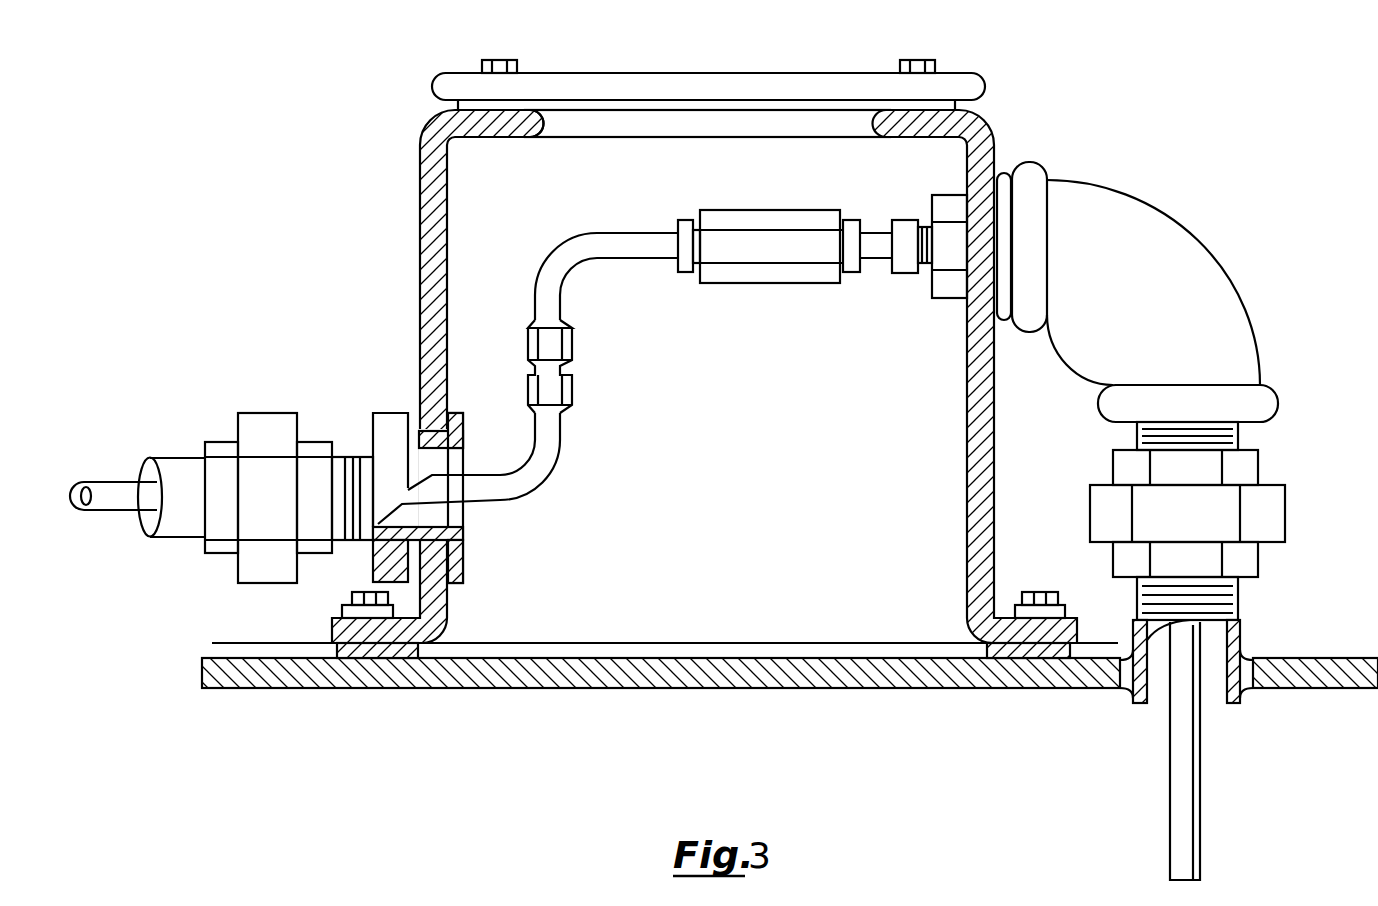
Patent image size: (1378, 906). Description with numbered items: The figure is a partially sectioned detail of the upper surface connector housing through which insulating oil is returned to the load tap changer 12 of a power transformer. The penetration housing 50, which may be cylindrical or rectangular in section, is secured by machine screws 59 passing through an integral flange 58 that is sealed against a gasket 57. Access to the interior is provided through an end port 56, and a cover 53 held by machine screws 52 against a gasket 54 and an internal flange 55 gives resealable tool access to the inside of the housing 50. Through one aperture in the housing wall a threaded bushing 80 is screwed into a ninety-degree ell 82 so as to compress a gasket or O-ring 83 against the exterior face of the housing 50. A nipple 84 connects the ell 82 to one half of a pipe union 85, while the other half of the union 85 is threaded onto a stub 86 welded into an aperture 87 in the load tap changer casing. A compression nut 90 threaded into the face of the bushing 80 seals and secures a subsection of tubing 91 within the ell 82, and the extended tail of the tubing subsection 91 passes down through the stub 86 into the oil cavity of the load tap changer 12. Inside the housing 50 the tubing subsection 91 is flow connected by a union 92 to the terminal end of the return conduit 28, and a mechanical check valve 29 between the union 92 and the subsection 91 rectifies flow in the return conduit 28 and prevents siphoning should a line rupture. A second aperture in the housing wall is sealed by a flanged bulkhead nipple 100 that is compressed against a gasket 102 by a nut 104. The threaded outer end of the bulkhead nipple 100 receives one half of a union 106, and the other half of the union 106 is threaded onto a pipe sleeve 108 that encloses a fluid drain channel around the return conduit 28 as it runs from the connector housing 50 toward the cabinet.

The load tap changer 12 is at (640, 688).
The return conduit 28 is at (91, 503).
The mechanical check valve 29 is at (750, 257).
The penetration housing 50 is at (420, 215).
The machine screws 52 is at (482, 64).
The cover 53 is at (730, 97).
The gasket 54 is at (655, 112).
The internal flange 55 is at (510, 137).
The end port 56 is at (545, 125).
The gasket 57 is at (492, 643).
The integral flange 58 is at (332, 624).
The machine screws 59 is at (350, 590).
The threaded bushing 80 is at (940, 300).
The 90° ell 82 is at (1135, 294).
The gasket or O-ring 83 is at (1003, 178).
The nipple 84 is at (1238, 436).
The pipe union 85 is at (1285, 490).
The stub 86 is at (1240, 622).
The aperture 87 is at (1247, 672).
The compression nut 90 is at (895, 275).
The tubing subsection 91 is at (1170, 760).
The union 92 is at (566, 368).
The flanged bulkhead nipple 100 is at (465, 428).
The gasket 102 is at (465, 557).
The nut 104 is at (373, 427).
The union 106 is at (265, 413).
The pipe sleeve 108 is at (166, 464).